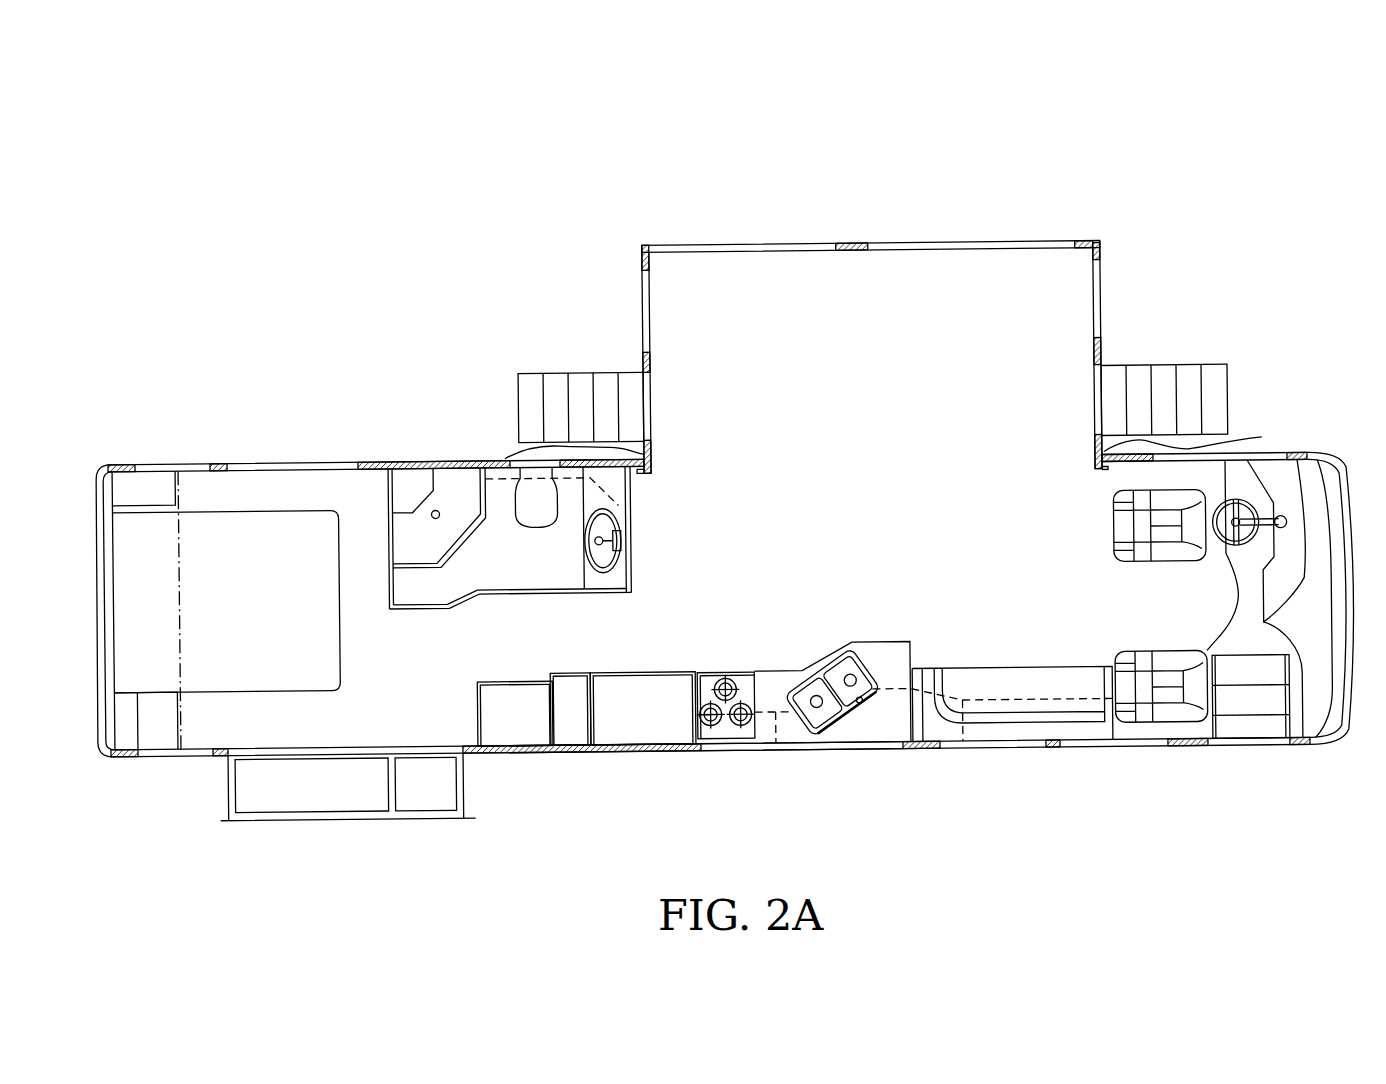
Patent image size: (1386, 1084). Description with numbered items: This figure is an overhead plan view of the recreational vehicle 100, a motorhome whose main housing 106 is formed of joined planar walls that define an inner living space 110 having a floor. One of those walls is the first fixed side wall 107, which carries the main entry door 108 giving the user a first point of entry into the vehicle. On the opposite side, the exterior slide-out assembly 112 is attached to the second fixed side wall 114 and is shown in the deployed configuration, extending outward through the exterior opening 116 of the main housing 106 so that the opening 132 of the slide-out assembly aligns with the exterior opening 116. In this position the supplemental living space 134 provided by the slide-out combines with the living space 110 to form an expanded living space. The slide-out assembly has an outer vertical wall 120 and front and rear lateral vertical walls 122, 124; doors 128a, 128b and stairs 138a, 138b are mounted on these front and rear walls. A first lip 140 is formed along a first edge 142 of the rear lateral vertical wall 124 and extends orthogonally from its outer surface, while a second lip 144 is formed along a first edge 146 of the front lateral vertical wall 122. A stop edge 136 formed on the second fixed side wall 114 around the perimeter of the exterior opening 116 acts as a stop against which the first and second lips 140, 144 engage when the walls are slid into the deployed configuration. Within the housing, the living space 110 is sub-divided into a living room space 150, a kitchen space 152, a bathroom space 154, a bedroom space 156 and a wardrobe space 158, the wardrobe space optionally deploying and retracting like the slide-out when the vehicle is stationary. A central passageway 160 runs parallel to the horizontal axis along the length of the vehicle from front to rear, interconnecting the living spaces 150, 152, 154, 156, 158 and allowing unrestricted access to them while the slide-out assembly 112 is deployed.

The recreational vehicle 100 is at (383, 223).
The main housing 106 is at (662, 759).
The first fixed side wall 107 is at (1112, 757).
The main entry door 108 is at (1237, 754).
The inner living space 110 is at (812, 516).
The exterior slide-out assembly 112 is at (1095, 253).
The second fixed side wall 114 is at (367, 465).
The exterior opening 116 is at (915, 464).
The outer vertical wall 120 is at (855, 251).
The front lateral vertical wall 122 is at (1103, 312).
The rear lateral vertical wall 124 is at (644, 310).
The door 128a is at (1095, 412).
The door 128b is at (652, 410).
The opening of the slide-out assembly 132 is at (850, 428).
The supplemental living space 134 is at (875, 319).
The stop edge 136 is at (513, 460).
The stairs 138a is at (1190, 376).
The stairs 138b is at (583, 378).
The first lip 140 is at (643, 483).
The first edge of the rear lateral vertical wall 142 is at (653, 468).
The second lip 144 is at (1100, 481).
The first edge of the front lateral vertical wall 146 is at (1097, 470).
The living room space 150 is at (1012, 604).
The kitchen space 152 is at (857, 733).
The bathroom space 154 is at (458, 501).
The bedroom space 156 is at (251, 592).
The wardrobe space 158 is at (310, 797).
The central passageway 160 is at (592, 656).